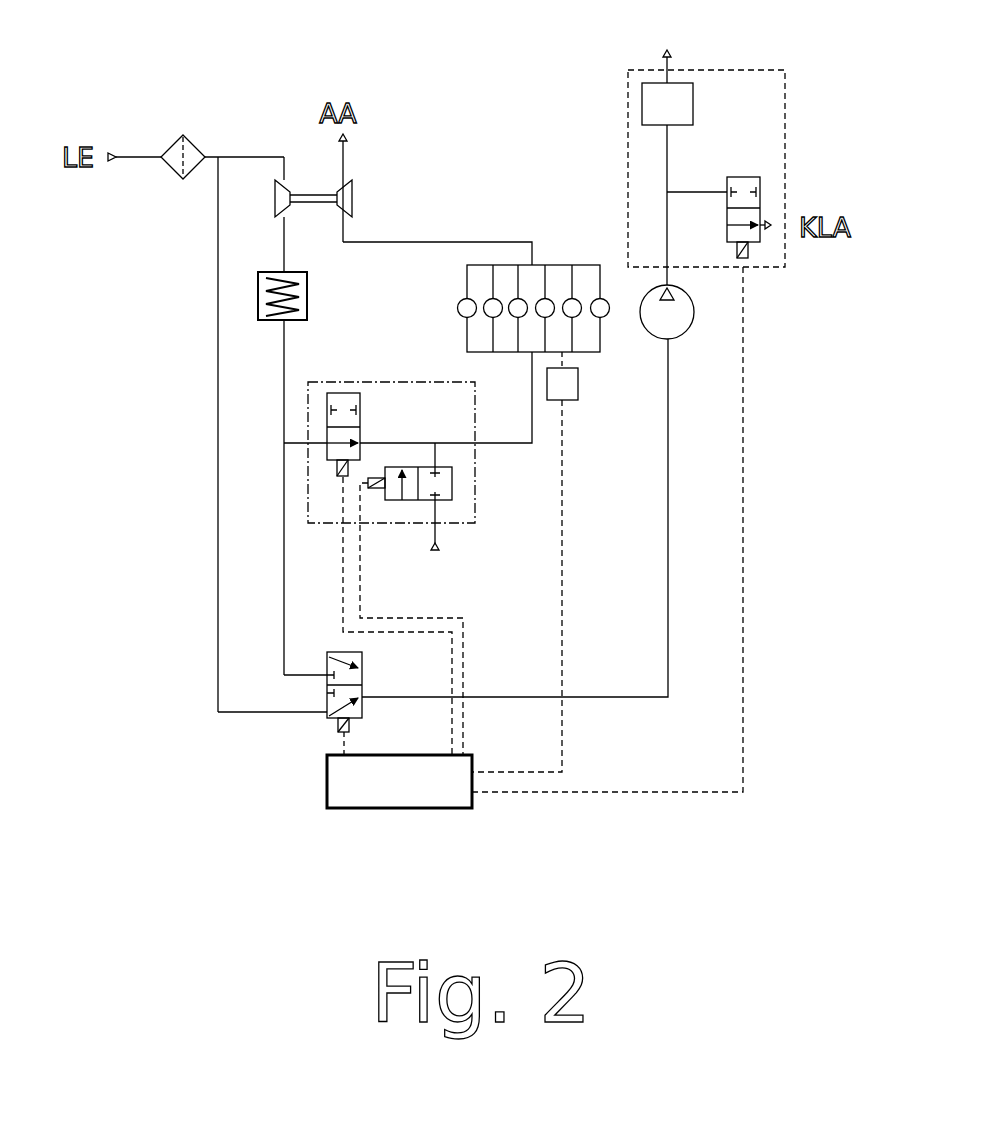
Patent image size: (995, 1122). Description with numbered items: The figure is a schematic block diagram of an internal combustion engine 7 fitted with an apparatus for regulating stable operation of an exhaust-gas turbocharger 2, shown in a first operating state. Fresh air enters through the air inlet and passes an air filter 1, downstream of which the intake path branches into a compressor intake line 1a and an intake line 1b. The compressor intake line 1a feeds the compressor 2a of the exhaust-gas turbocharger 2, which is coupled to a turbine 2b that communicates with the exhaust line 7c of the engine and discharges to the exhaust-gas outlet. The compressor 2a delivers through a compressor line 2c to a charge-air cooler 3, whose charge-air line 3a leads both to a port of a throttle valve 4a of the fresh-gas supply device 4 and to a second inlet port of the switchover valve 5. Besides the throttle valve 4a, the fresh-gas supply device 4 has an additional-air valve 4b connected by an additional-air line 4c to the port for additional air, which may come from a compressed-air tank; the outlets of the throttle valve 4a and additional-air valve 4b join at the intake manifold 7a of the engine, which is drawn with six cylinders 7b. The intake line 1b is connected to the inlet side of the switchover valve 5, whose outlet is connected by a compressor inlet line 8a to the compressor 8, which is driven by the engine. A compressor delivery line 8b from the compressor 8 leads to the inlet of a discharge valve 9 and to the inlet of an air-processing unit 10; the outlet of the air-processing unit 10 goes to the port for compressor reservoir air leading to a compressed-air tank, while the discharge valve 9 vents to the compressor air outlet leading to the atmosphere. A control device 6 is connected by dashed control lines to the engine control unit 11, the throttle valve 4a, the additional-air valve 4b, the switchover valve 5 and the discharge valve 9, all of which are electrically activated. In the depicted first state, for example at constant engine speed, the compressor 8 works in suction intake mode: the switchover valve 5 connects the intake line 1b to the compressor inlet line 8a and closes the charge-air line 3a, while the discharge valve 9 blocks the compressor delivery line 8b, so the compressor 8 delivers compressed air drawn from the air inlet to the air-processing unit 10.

The air filter 1 is at (167, 142).
The compressor intake line 1a is at (241, 155).
The intake line 1b is at (215, 480).
The exhaust-gas turbocharger 2 is at (287, 158).
The compressor 2a is at (275, 190).
The turbine 2b is at (353, 188).
The compressor line 2c is at (283, 240).
The charge-air cooler 3 is at (257, 305).
The charge-air line 3a is at (283, 367).
The fresh-gas supply device 4 is at (333, 456).
The throttle valve 4a is at (358, 393).
The additional-air valve 4b is at (423, 467).
The additional-air line 4c is at (437, 533).
The switchover valve 5 is at (328, 716).
The control device 6 is at (333, 810).
The internal combustion engine 7 is at (534, 232).
The intake manifold 7a is at (532, 400).
The cylinders 7b is at (547, 307).
The exhaust line 7c is at (433, 240).
The compressor 8 is at (682, 337).
The compressor inlet line 8a is at (668, 612).
The compressor delivery line 8b is at (665, 213).
The discharge valve 9 is at (757, 175).
The air-processing unit 10 is at (693, 97).
The engine control unit 11 is at (578, 390).